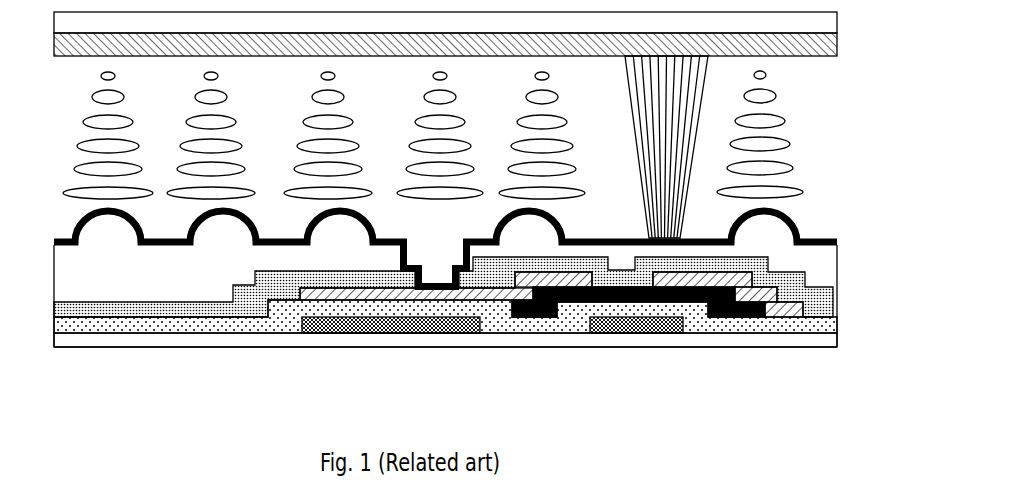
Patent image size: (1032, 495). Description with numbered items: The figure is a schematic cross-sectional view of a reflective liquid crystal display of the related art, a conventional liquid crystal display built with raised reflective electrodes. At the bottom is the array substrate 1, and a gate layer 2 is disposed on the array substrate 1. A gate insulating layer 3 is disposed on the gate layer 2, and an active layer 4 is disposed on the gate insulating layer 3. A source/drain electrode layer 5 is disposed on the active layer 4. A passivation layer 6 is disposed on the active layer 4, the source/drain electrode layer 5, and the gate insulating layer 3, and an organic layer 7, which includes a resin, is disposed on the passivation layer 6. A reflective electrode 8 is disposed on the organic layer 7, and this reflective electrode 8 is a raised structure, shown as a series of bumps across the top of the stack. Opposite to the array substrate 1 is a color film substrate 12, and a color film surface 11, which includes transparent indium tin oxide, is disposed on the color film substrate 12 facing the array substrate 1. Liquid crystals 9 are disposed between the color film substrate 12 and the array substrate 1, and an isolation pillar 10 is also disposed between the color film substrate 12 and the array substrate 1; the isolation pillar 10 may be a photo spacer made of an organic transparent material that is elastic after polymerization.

The array substrate 1 is at (803, 338).
The gate layer 2 is at (500, 359).
The gate insulating layer 3 is at (445, 350).
The active layer 4 is at (660, 352).
The source/drain electrode layer 5 is at (753, 295).
The passivation layer 6 is at (234, 333).
The organic layer 7 is at (803, 257).
The reflective electrode 8 is at (790, 215).
The liquid crystals 9 is at (758, 167).
The isolation pillar 10 is at (670, 123).
The color film surface 11 is at (826, 43).
The color film substrate 12 is at (826, 22).